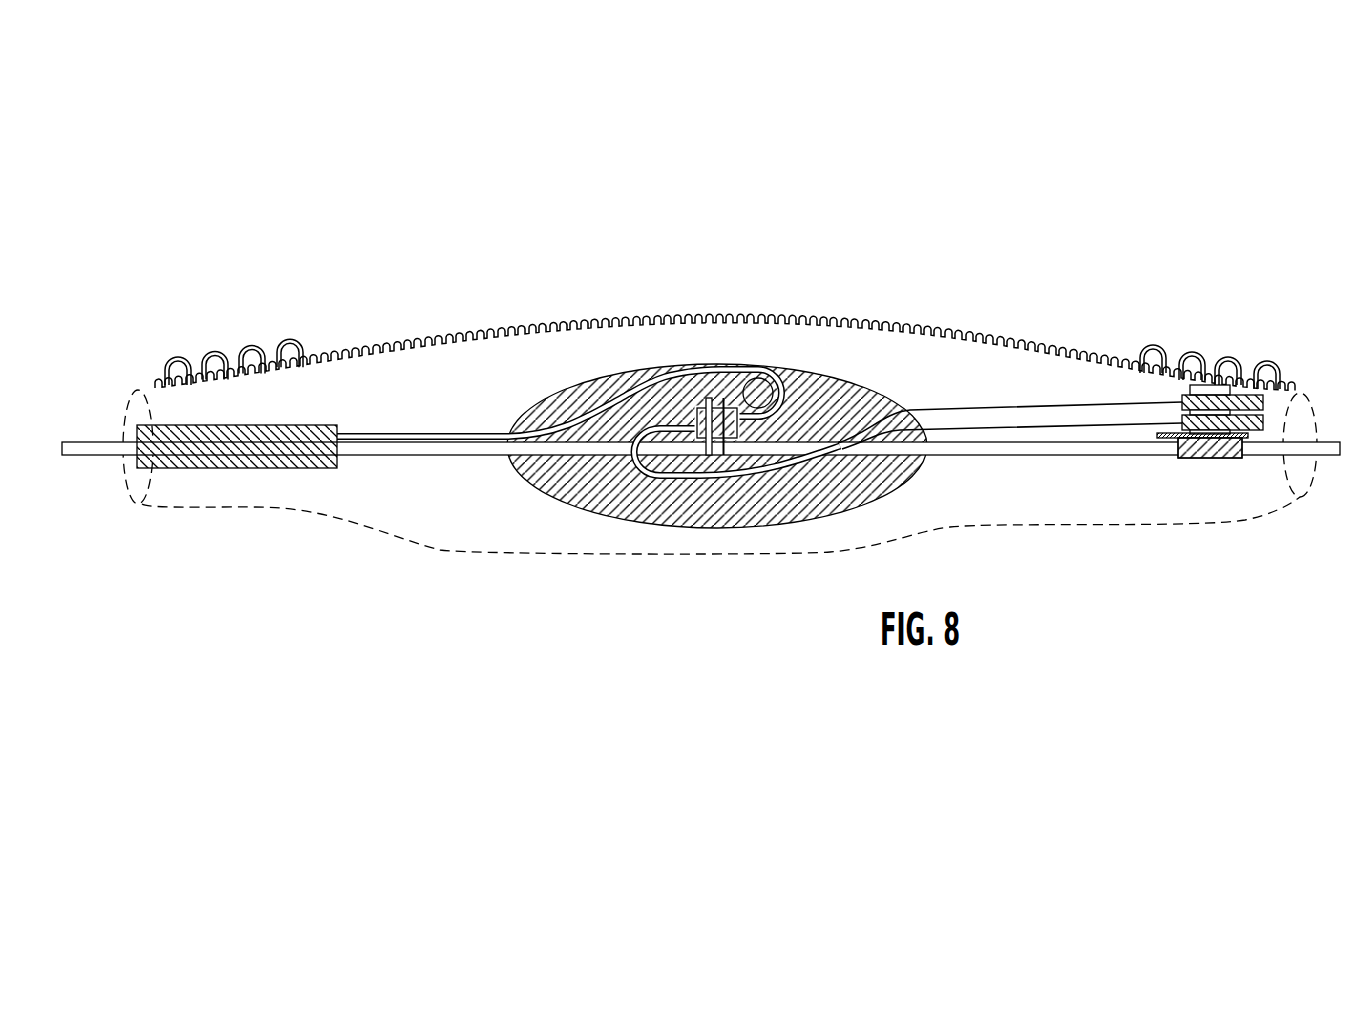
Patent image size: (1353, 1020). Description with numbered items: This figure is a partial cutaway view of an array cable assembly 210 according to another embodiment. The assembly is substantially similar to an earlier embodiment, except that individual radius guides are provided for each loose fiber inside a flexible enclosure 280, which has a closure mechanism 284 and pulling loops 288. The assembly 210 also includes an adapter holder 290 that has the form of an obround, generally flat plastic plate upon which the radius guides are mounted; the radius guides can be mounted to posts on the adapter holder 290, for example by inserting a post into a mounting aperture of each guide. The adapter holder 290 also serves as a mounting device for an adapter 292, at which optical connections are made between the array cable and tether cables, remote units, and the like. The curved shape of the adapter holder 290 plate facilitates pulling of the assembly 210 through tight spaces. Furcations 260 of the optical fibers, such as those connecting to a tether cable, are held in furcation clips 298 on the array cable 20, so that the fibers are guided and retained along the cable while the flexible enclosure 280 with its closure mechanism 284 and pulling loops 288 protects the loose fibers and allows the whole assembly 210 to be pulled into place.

The array cable 20 is at (93, 455).
The array cable assembly 210 is at (208, 186).
The furcations 260 is at (1182, 397).
The flexible enclosure 280 is at (1042, 348).
The closure mechanism 284 is at (430, 338).
The pulling loops 288 is at (204, 350).
The adapter holder 290 is at (692, 360).
The adapter 292 is at (724, 400).
The furcation clips 298 is at (1210, 458).